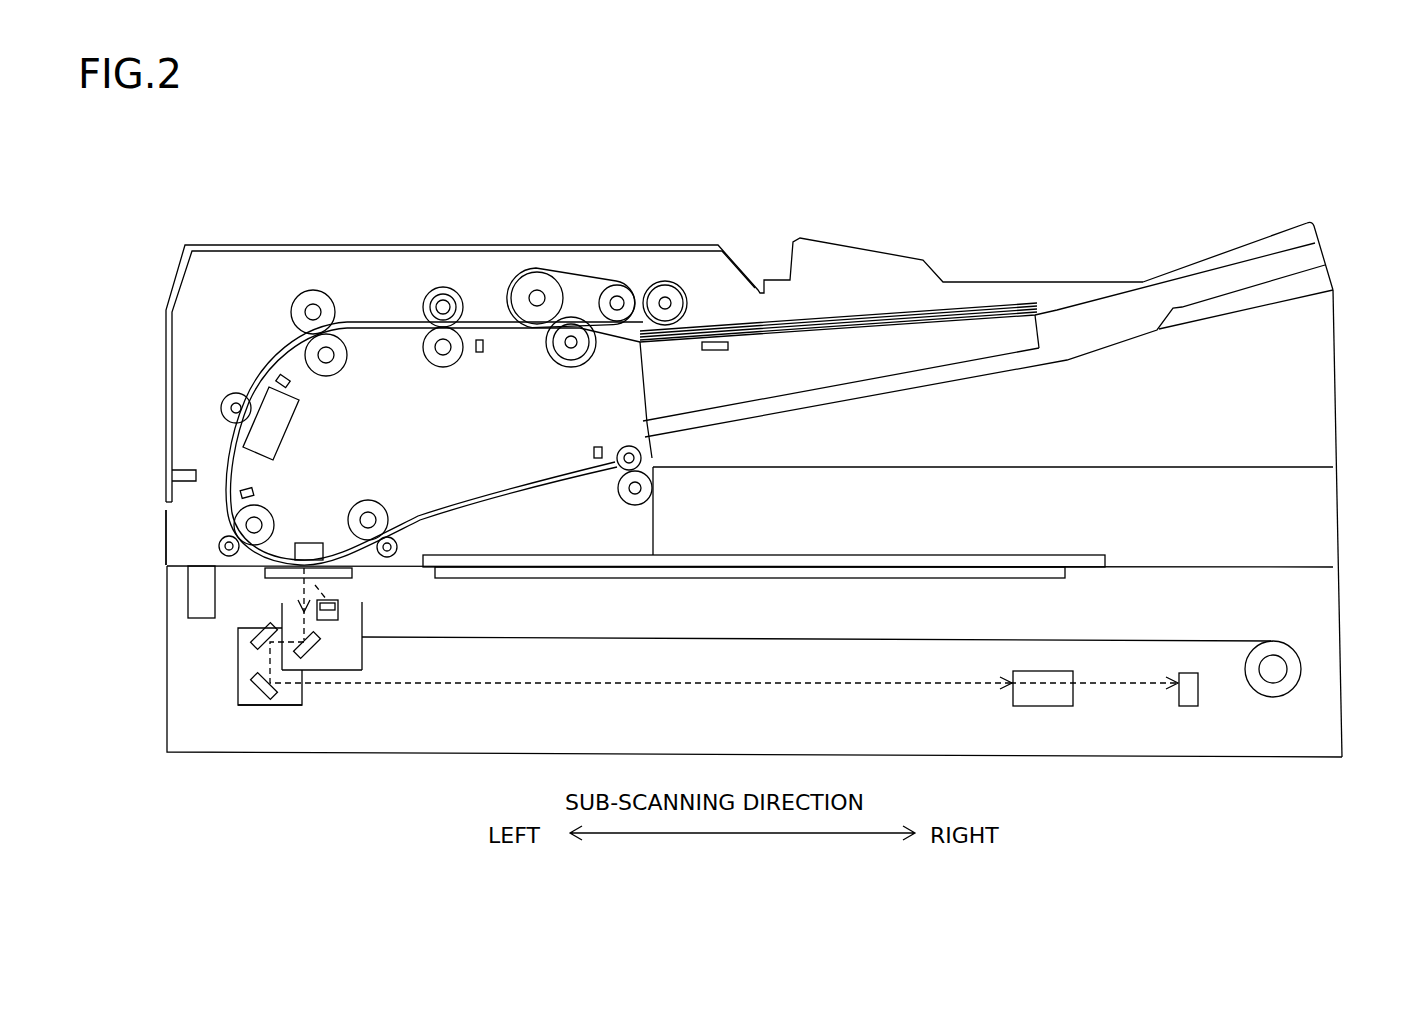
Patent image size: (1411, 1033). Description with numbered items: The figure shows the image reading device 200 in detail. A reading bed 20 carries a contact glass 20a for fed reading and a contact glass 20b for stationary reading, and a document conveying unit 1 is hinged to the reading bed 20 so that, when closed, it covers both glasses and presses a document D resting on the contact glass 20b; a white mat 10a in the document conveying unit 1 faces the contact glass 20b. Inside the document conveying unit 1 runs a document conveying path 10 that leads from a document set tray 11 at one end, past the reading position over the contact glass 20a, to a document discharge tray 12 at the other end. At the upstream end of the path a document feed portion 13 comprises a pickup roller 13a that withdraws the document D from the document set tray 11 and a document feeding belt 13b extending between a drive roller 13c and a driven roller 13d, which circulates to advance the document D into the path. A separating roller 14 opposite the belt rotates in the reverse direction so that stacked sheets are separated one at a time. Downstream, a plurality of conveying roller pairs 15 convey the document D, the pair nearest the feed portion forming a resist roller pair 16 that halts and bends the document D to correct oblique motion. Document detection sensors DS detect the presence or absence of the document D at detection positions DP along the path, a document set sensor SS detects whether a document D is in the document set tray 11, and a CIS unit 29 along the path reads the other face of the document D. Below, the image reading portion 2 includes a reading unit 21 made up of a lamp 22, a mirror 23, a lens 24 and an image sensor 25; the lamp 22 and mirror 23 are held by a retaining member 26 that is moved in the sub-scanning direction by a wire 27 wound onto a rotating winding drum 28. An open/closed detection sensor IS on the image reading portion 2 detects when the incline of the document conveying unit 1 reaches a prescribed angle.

The image reading device 200 is at (237, 238).
The document conveying unit 1 is at (1342, 540).
The image reading portion 2 is at (1344, 606).
The document conveying path 10 is at (383, 322).
The white mat 10a is at (765, 558).
The document set tray 11 is at (872, 327).
The document discharge tray 12 is at (948, 467).
The document feed portion 13 is at (619, 231).
The pickup roller 13a is at (692, 252).
The document feeding belt 13b is at (585, 300).
The drive roller 13c is at (537, 298).
The driven roller 13d is at (617, 302).
The separating roller 14 is at (578, 353).
The conveying roller pairs 15 is at (343, 352).
The resist roller pair 16 is at (448, 422).
The reading bed 20 is at (182, 565).
The contact glass 20a is at (352, 573).
The contact glass 20b is at (675, 578).
The reading unit 21 is at (232, 680).
The lamp 22 is at (330, 620).
The mirror 23 is at (270, 628).
The lens 24 is at (1043, 697).
The image sensor 25 is at (1188, 697).
The retaining member 26 is at (278, 692).
The wire 27 is at (905, 638).
The winding drum 28 is at (1272, 690).
The CIS unit 29 is at (280, 432).
The document D is at (822, 312).
The document set sensor SS is at (713, 352).
The document detection sensors DS is at (297, 387).
The detection positions DP is at (205, 522).
The open/closed detection sensor IS is at (202, 608).